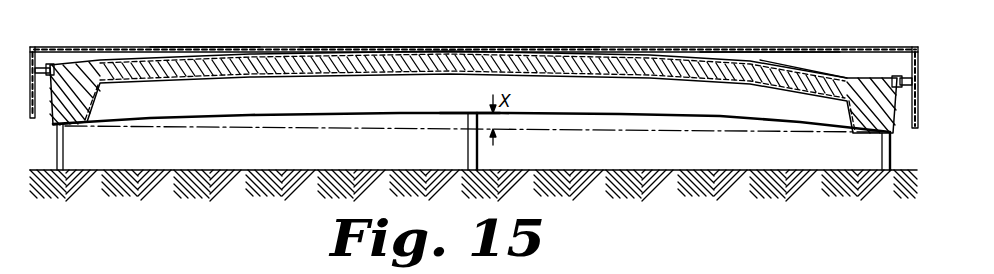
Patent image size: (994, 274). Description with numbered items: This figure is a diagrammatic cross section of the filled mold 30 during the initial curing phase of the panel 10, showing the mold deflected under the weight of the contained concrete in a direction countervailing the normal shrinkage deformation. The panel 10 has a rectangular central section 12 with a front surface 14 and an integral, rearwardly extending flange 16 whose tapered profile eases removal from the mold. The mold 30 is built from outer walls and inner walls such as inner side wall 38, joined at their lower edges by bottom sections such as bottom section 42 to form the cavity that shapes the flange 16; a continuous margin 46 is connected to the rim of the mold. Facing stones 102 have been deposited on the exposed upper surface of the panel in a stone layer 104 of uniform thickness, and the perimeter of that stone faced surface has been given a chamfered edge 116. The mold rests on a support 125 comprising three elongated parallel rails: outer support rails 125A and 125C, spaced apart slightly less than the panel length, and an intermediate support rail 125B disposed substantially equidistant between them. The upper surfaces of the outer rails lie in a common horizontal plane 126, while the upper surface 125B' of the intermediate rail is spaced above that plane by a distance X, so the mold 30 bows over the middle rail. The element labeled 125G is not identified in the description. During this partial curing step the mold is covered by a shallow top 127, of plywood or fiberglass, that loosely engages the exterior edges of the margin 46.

The panel 10 is at (537, 53).
The central section 12 is at (427, 53).
The front surface 14 is at (143, 62).
The flange 16 is at (380, 2).
The mold 30 is at (302, 143).
The inner side wall 38 is at (318, 5).
The bottom section 42 is at (348, 18).
The margin 46 is at (50, 65).
The facing stones 102 is at (815, 70).
The stone layer 104 is at (773, 65).
The chamfered edge 116 is at (42, 69).
The support 125 is at (697, 160).
The outer support rail 125A is at (63, 130).
The intermediate support rail 125B is at (443, 141).
The upper surface of intermediate support rail 125B' is at (455, 101).
The outer support rail 125C is at (885, 137).
The right support post 125G is at (884, 167).
The horizontal plane 126 is at (588, 133).
The shallow top 127 is at (195, 45).